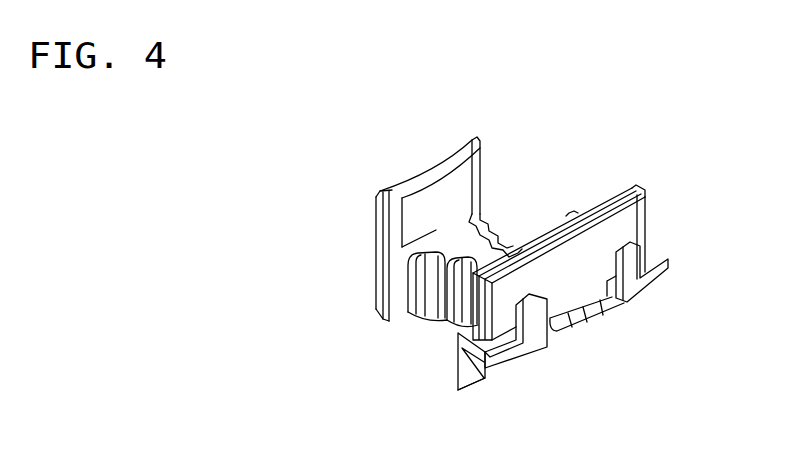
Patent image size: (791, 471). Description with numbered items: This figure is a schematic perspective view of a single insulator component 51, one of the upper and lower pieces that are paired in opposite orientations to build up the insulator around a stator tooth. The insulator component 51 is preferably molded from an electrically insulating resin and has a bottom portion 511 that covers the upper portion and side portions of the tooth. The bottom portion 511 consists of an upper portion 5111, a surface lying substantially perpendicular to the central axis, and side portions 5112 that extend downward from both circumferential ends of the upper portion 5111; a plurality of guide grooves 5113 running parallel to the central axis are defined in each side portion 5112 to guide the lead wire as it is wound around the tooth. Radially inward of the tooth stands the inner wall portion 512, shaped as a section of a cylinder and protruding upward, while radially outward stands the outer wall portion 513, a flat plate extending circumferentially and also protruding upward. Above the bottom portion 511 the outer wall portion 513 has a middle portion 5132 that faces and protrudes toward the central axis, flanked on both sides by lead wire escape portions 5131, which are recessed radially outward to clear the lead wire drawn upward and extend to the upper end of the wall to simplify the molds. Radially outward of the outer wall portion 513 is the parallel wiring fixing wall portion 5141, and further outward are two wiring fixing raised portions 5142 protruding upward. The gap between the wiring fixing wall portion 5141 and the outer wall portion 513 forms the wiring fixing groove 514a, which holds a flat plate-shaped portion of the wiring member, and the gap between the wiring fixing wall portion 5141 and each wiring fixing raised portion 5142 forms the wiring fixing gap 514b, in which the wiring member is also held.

The insulator component 51 is at (263, 106).
The bottom portion 511 is at (502, 213).
The upper portion 5111 is at (497, 217).
The side portion 5112 is at (326, 340).
The guide groove 5113 is at (421, 295).
The inner wall portion 512 is at (373, 209).
The outer wall portion 513 is at (634, 192).
The lead wire escape portion 5131 is at (572, 206).
The middle portion 5132 is at (540, 241).
The wiring fixing wall portion 5141 is at (647, 228).
The wiring fixing raised portion 5142 is at (538, 330).
The wiring fixing groove 514a is at (470, 322).
The wiring fixing gap 514b is at (500, 336).